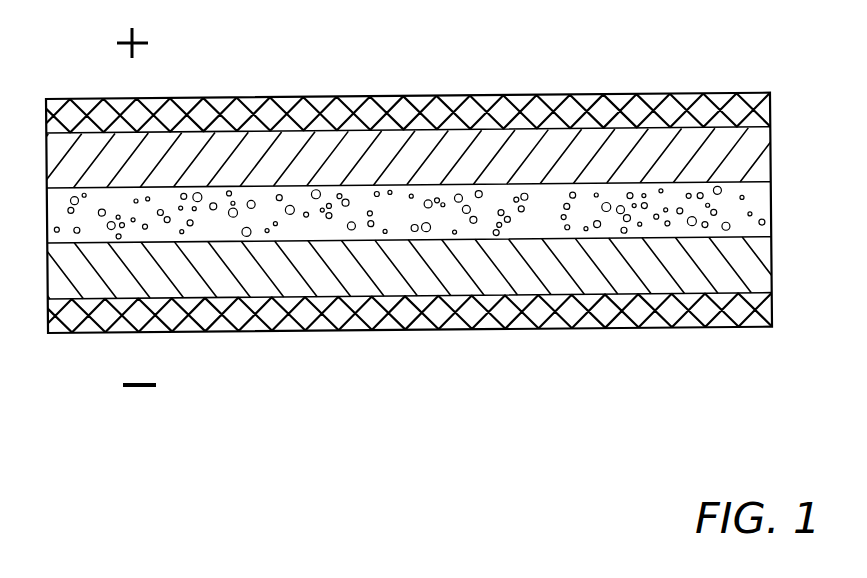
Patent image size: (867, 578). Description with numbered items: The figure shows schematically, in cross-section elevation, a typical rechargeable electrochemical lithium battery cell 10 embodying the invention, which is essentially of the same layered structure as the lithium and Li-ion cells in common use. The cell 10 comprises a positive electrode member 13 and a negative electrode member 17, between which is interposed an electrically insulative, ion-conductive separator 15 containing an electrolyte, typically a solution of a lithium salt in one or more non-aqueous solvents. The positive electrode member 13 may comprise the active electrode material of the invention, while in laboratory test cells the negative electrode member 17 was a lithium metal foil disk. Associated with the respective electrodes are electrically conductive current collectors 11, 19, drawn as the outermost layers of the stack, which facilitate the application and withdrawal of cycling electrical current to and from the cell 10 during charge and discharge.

The cell 10 is at (422, 383).
The current collector 11 is at (768, 108).
The positive electrode member 13 is at (758, 148).
The separator 15 is at (762, 203).
The negative electrode member 17 is at (762, 277).
The current collector 19 is at (763, 308).